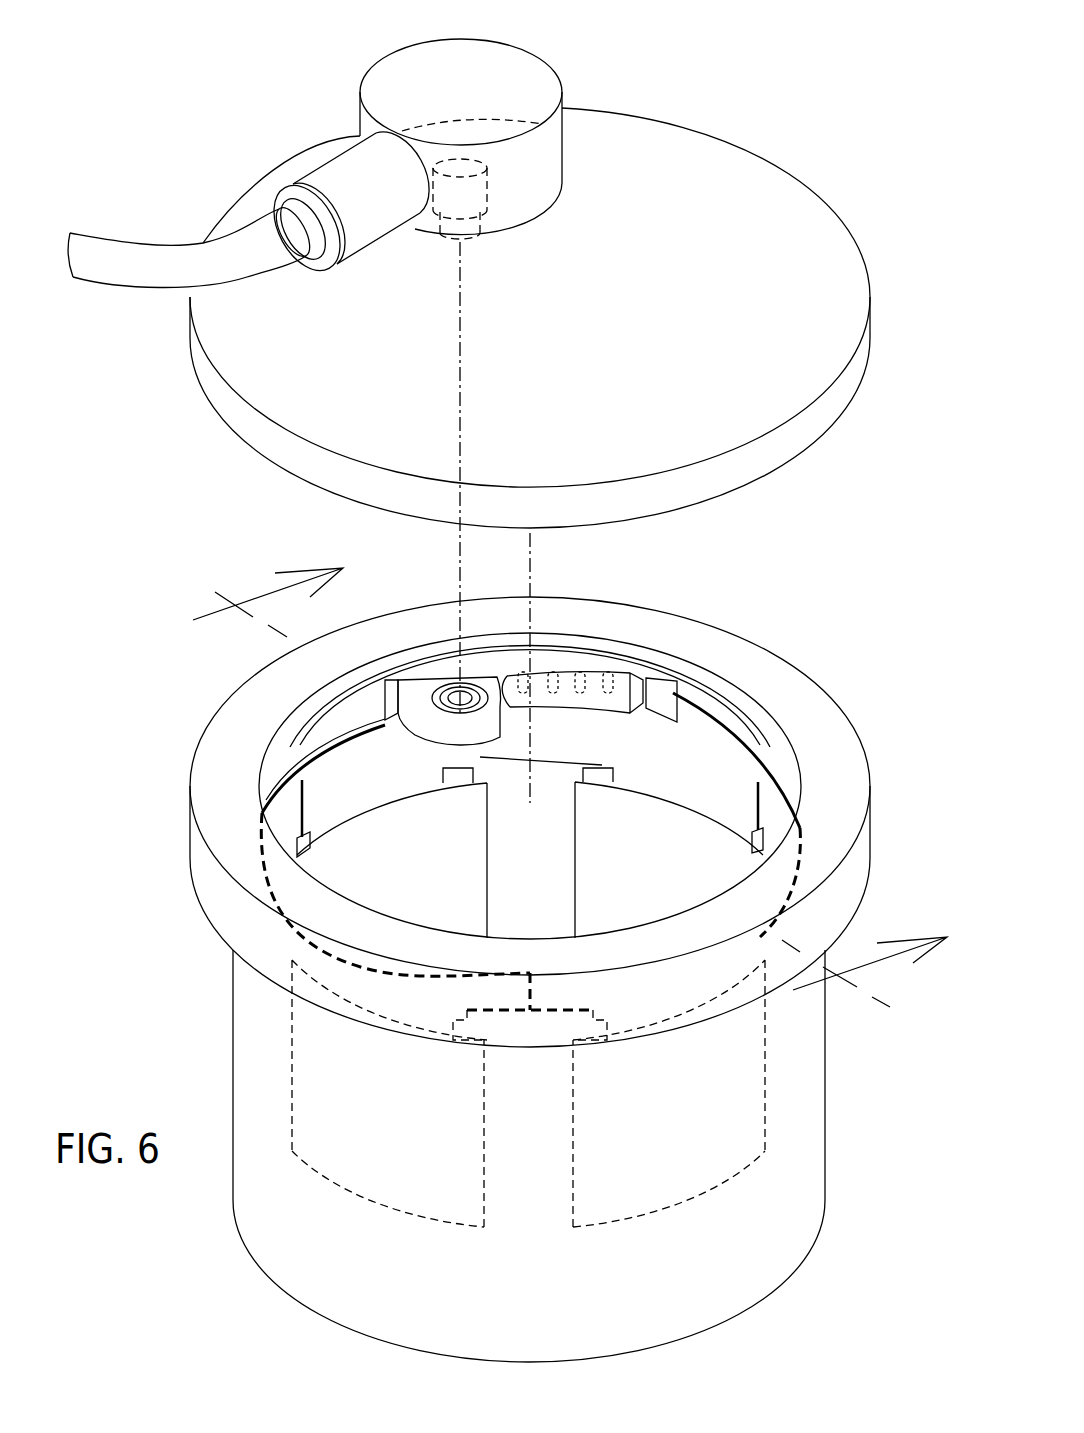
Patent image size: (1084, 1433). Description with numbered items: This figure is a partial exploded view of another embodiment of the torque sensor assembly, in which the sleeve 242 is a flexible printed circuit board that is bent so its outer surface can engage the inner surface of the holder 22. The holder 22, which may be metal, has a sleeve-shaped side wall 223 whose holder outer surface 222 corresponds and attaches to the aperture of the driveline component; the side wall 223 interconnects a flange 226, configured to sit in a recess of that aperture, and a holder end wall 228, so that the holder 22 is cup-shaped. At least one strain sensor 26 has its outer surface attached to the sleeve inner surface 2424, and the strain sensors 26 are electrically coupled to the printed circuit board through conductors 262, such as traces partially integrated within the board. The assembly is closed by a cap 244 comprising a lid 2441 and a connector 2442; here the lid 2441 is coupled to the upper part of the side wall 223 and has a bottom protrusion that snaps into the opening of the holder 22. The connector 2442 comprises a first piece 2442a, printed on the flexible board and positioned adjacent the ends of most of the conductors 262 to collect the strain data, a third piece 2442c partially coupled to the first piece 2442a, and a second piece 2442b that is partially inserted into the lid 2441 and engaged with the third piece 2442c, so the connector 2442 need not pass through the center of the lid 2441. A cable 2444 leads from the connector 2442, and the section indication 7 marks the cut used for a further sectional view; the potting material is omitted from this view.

The cap 244 is at (368, 144).
The connector 2442 is at (436, 141).
The second piece 2442b is at (497, 102).
The cable 2444 is at (116, 249).
The lid 2441 is at (640, 356).
The holder 22 is at (532, 794).
The flange 226 is at (783, 697).
The sleeve 242 is at (513, 777).
The third piece 2442c is at (593, 670).
The first piece 2442a is at (660, 688).
The conductors 262 is at (323, 775).
The sleeve inner surface 2424 is at (563, 857).
The strain sensor 26 is at (660, 875).
The holder outer surface 222 is at (506, 1160).
The side wall 223 is at (292, 1218).
The holder end wall 228 is at (326, 1316).
The section line 7 is at (570, 799).